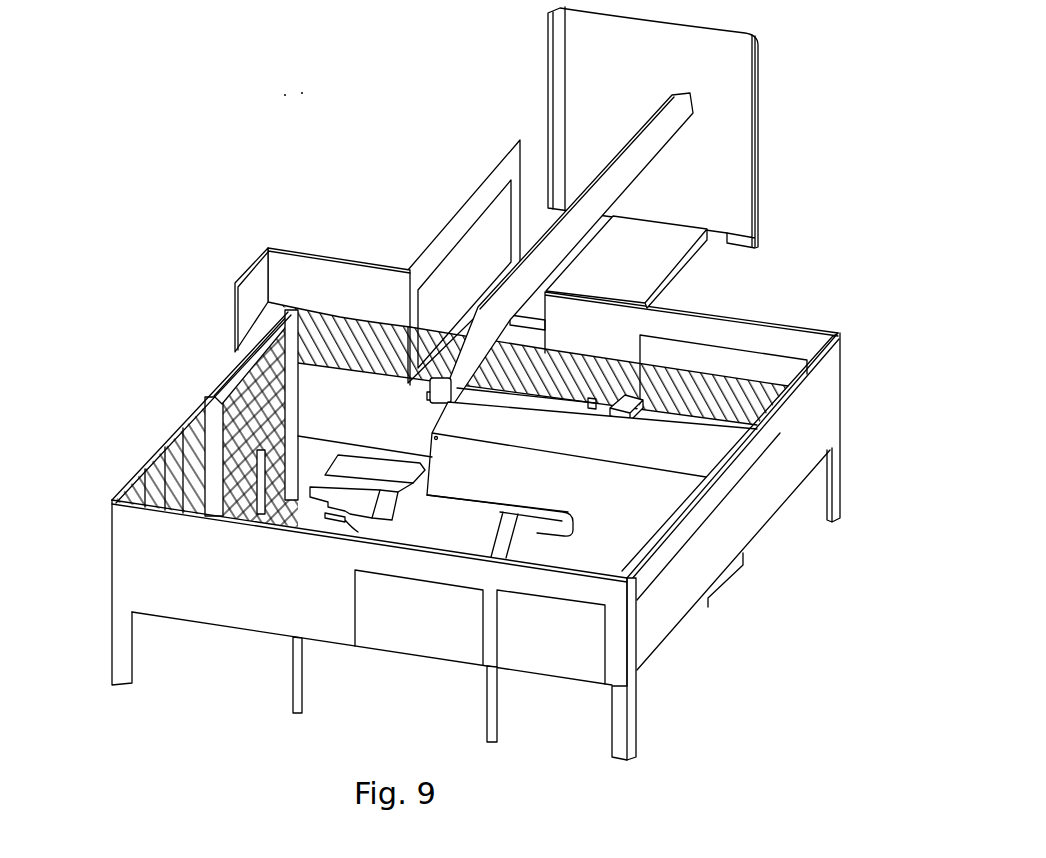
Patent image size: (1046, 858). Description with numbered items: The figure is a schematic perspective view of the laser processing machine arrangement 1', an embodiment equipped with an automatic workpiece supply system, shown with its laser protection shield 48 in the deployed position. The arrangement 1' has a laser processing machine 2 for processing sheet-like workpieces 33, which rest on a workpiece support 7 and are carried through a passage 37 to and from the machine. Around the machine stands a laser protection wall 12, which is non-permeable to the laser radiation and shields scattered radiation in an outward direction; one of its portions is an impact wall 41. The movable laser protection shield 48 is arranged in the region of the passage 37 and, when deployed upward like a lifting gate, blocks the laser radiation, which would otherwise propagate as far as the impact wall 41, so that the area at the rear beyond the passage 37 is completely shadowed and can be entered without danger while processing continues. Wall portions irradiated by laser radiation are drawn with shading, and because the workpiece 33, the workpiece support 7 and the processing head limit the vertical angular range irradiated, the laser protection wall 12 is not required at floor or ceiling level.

The laser processing machine arrangement 1' is at (390, 262).
The laser processing machine 2 is at (680, 497).
The workpiece support 7 is at (417, 537).
The laser protection wall 12 is at (132, 561).
The workpiece 33 is at (468, 520).
The passage 37 is at (479, 298).
The impact wall 41 is at (584, 77).
The laser protection shield 48 is at (438, 332).